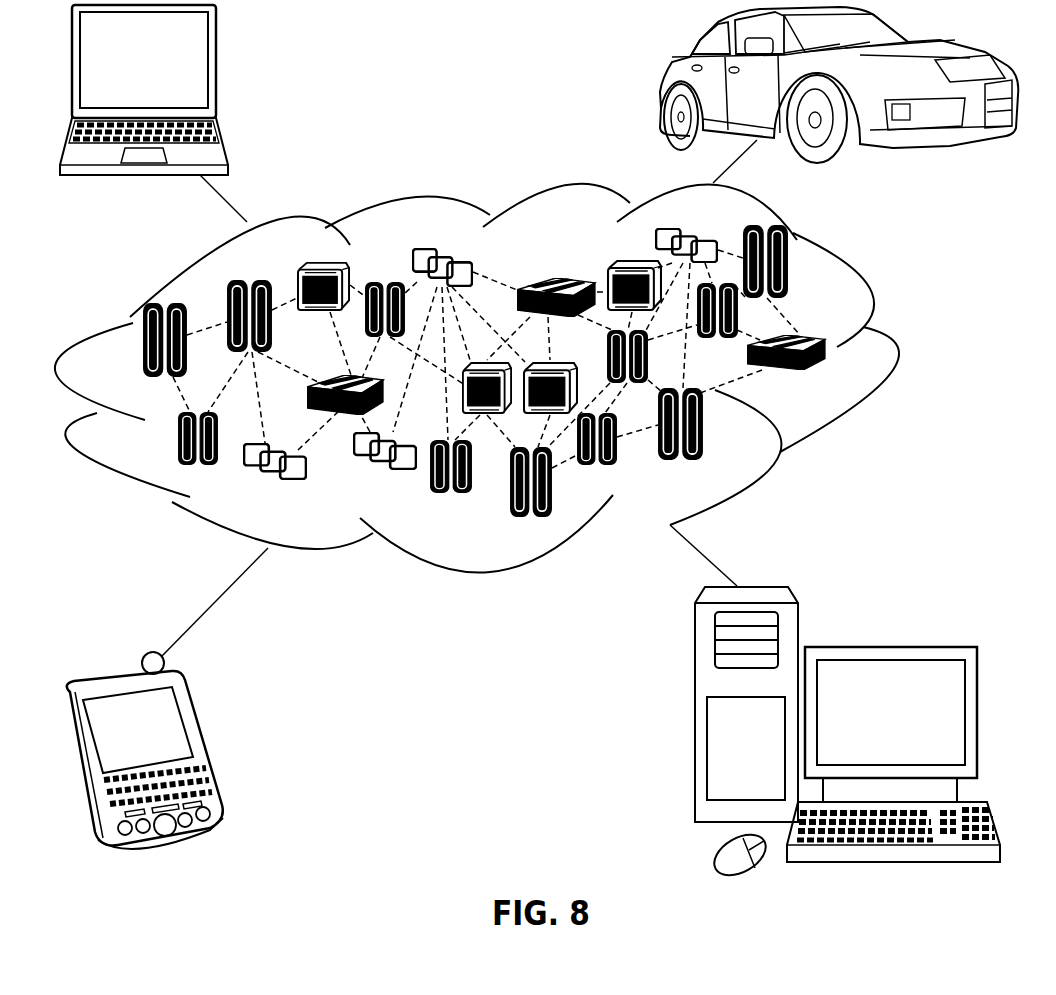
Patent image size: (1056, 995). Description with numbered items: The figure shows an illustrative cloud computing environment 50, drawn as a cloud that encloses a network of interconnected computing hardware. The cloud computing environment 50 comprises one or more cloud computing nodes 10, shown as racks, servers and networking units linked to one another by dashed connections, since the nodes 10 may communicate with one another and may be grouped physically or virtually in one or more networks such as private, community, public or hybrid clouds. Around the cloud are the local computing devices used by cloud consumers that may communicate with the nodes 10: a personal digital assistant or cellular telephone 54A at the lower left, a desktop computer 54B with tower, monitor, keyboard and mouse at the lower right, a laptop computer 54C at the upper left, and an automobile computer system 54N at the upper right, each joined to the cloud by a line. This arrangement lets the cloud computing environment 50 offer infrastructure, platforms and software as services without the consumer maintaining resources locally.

The laptop computer 54C is at (213, 68).
The automobile computer system 54N is at (660, 86).
The personal digital assistant (PDA) or cellular telephone 54A is at (203, 745).
The desktop computer 54B is at (888, 645).
The cloud computing environment 50 is at (500, 378).
The cloud computing node 10 is at (826, 380).